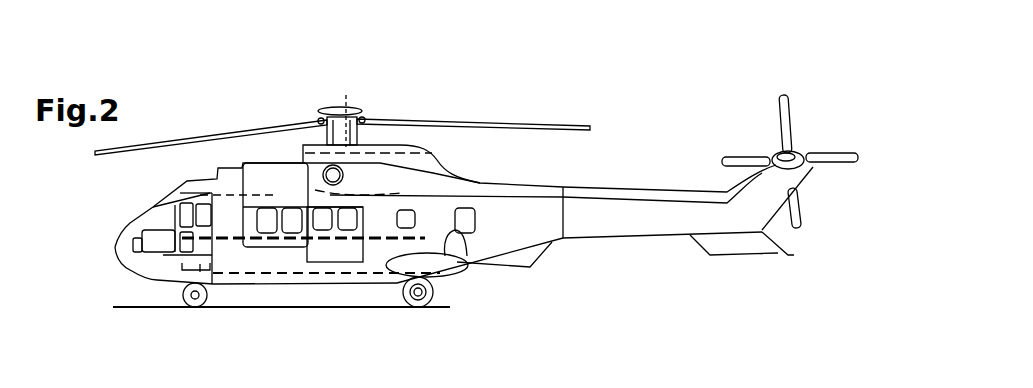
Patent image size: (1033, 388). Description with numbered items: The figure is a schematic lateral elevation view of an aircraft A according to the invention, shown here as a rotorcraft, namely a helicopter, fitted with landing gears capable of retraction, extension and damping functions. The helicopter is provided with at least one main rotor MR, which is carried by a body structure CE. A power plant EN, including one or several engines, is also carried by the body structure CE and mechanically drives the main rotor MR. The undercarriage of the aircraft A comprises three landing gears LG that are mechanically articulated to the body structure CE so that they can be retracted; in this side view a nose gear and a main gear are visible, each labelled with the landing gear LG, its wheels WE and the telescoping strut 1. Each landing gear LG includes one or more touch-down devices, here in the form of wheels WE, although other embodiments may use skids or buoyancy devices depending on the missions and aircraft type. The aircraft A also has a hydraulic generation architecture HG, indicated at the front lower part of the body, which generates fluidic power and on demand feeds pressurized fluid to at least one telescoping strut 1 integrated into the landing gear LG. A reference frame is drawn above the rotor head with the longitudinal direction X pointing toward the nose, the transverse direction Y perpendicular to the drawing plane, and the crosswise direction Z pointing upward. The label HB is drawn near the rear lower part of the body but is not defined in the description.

The power plant EN is at (395, 153).
The main rotor MR is at (550, 120).
The body structure CE is at (470, 202).
The hydraulic generation architecture HG is at (182, 257).
The rear lower structure of the fuselage HB is at (484, 288).
The aircraft A is at (824, 244).
The longitudinal direction X is at (26, 247).
The transverse direction Y is at (350, 92).
The crosswise direction Z is at (346, 88).
The landing gear LG is at (315, 325).
The wheels WE is at (315, 325).
The telescoping strut 1 is at (208, 296).